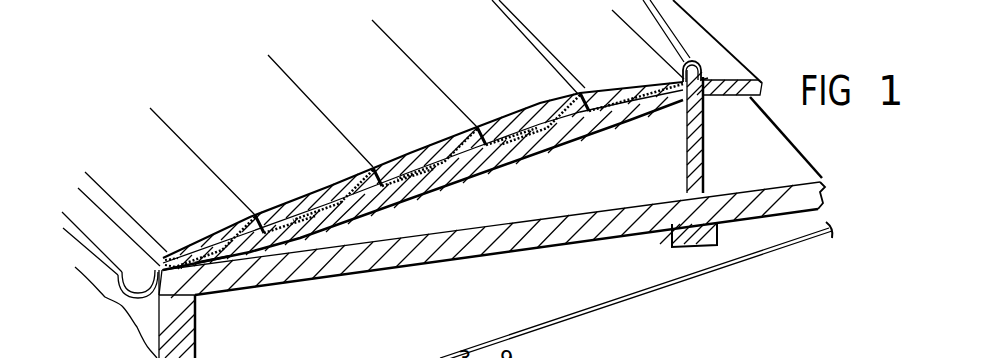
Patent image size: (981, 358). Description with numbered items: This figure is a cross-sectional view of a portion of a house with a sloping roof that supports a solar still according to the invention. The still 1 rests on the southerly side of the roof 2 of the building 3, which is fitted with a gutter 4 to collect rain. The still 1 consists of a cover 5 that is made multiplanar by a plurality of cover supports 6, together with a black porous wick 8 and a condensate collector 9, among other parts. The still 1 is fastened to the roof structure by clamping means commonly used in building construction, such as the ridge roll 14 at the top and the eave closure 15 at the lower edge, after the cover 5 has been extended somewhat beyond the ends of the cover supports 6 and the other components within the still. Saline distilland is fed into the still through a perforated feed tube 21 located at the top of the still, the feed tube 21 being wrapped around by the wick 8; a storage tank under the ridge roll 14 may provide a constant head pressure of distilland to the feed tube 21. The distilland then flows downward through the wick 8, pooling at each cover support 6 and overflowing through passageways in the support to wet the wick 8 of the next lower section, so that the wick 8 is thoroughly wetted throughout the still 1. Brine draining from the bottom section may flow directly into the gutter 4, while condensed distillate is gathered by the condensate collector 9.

The still 1 is at (313, 197).
The roof 2 is at (388, 202).
The building 3 is at (648, 190).
The gutter 4 is at (130, 293).
The cover 5 is at (692, 277).
The cover supports 6 is at (577, 95).
The black porous wick 8 is at (563, 118).
The condensate collector 9 is at (588, 106).
The ridge roll 14 is at (703, 63).
The eave closure 15 is at (212, 262).
The perforated feed tube 21 is at (668, 90).